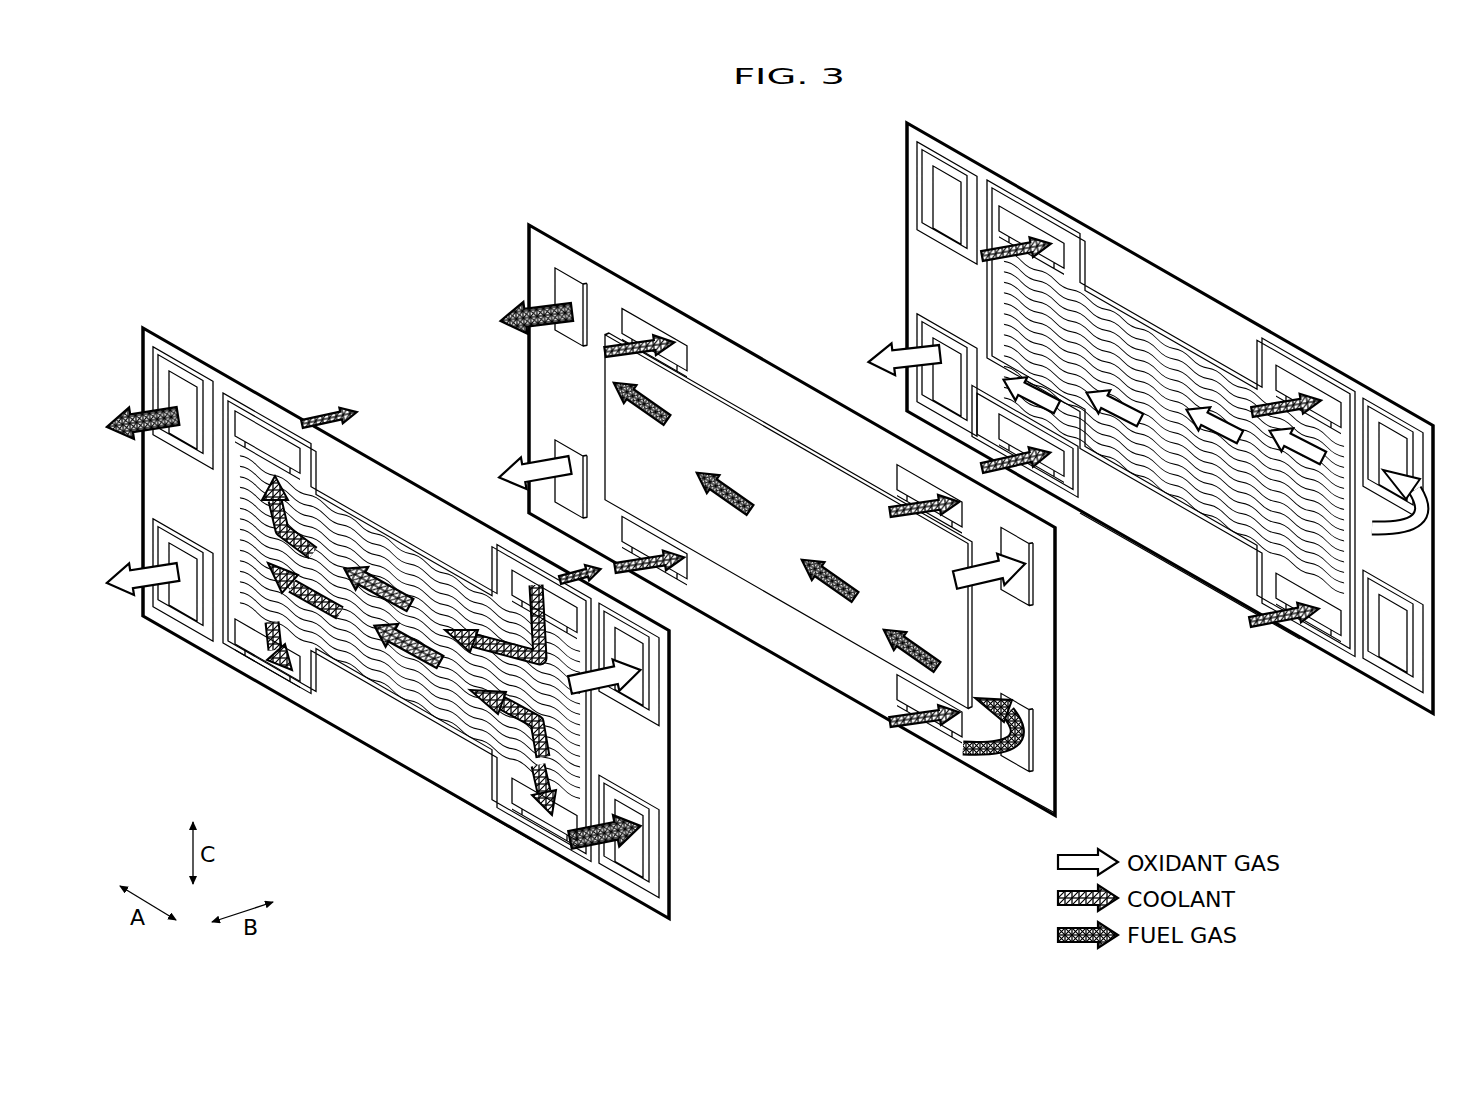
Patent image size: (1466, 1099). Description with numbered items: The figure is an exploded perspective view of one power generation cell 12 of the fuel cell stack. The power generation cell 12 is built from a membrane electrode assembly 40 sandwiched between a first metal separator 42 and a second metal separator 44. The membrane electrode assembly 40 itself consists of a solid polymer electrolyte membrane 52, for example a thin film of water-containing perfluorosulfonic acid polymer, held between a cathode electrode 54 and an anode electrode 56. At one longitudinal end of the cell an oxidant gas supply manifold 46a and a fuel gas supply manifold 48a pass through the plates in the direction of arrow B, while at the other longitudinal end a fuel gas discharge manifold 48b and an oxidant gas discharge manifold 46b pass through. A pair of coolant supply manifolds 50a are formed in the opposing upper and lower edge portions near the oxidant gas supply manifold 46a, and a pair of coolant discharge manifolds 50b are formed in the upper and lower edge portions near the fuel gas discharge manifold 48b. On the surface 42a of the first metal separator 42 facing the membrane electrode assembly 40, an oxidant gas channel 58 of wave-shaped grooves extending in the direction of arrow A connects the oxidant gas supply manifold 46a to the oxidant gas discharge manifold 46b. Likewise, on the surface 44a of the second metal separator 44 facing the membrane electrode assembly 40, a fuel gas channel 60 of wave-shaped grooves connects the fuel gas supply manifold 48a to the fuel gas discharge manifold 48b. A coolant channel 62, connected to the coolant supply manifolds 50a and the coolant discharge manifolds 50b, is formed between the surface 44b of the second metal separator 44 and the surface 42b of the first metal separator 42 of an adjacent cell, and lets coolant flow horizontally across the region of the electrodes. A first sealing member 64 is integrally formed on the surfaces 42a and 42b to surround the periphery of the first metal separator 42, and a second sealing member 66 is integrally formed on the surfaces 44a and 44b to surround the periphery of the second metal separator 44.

The power generation cell 12 is at (315, 256).
The membrane electrode assembly 40 is at (553, 236).
The first metal separator 42 is at (967, 155).
The surface of first metal separator 42a is at (1215, 550).
The surface of first metal separator 42b is at (1233, 563).
The second metal separator 44 is at (172, 340).
The surface of second metal separator 44a is at (463, 767).
The surface of second metal separator 44b is at (450, 757).
The oxidant gas supply manifold 46a is at (640, 688).
The oxidant gas discharge manifold 46b is at (182, 600).
The fuel gas supply manifold 48a is at (640, 857).
The fuel gas discharge manifold 48b is at (178, 392).
The coolant supply manifold 50a is at (563, 817).
The coolant discharge manifold 50b is at (255, 433).
The solid polymer electrolyte membrane 52 is at (1020, 784).
The cathode electrode 54 is at (757, 440).
The anode electrode 56 is at (845, 605).
The oxidant gas channel 58 is at (1143, 490).
The fuel gas channel 60 is at (340, 533).
The coolant channel 62 is at (385, 660).
The first sealing member 64 is at (1108, 300).
The second sealing member 66 is at (243, 395).